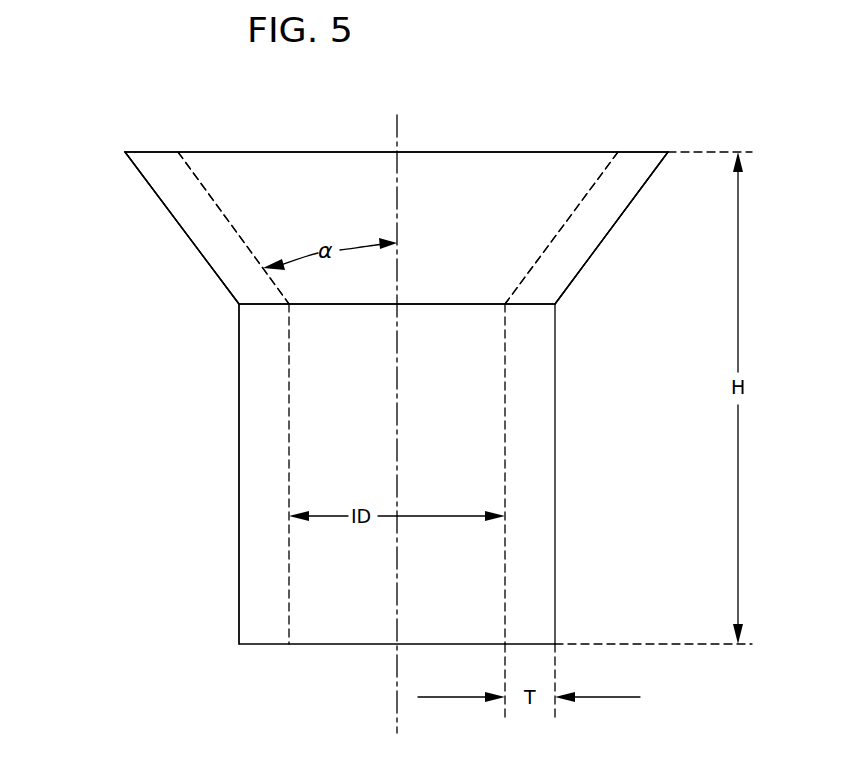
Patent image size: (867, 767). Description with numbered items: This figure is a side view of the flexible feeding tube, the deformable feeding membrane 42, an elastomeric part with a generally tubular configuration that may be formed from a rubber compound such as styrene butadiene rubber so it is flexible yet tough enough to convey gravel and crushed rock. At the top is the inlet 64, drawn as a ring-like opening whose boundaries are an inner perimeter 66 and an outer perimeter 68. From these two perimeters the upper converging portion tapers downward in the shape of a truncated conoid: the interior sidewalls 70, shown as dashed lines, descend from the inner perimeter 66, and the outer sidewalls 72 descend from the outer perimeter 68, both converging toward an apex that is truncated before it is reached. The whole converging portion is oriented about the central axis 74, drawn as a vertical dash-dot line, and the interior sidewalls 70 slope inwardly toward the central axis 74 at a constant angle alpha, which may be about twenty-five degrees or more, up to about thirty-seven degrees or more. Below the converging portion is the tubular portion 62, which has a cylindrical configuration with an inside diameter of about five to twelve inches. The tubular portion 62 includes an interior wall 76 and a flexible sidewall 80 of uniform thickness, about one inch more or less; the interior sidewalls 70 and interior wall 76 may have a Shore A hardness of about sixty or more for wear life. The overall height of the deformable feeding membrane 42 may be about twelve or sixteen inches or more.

The deformable feeding membrane 42 is at (462, 103).
The tubular portion 62 is at (555, 555).
The inlet 64 is at (152, 152).
The inner perimeter 66 is at (178, 152).
The outer perimeter 68 is at (125, 152).
The interior sidewalls 70 is at (217, 205).
The outer sidewalls 72 is at (193, 243).
The central axis 74 is at (397, 699).
The interior wall 76 is at (505, 468).
The flexible sidewall 80 is at (260, 602).